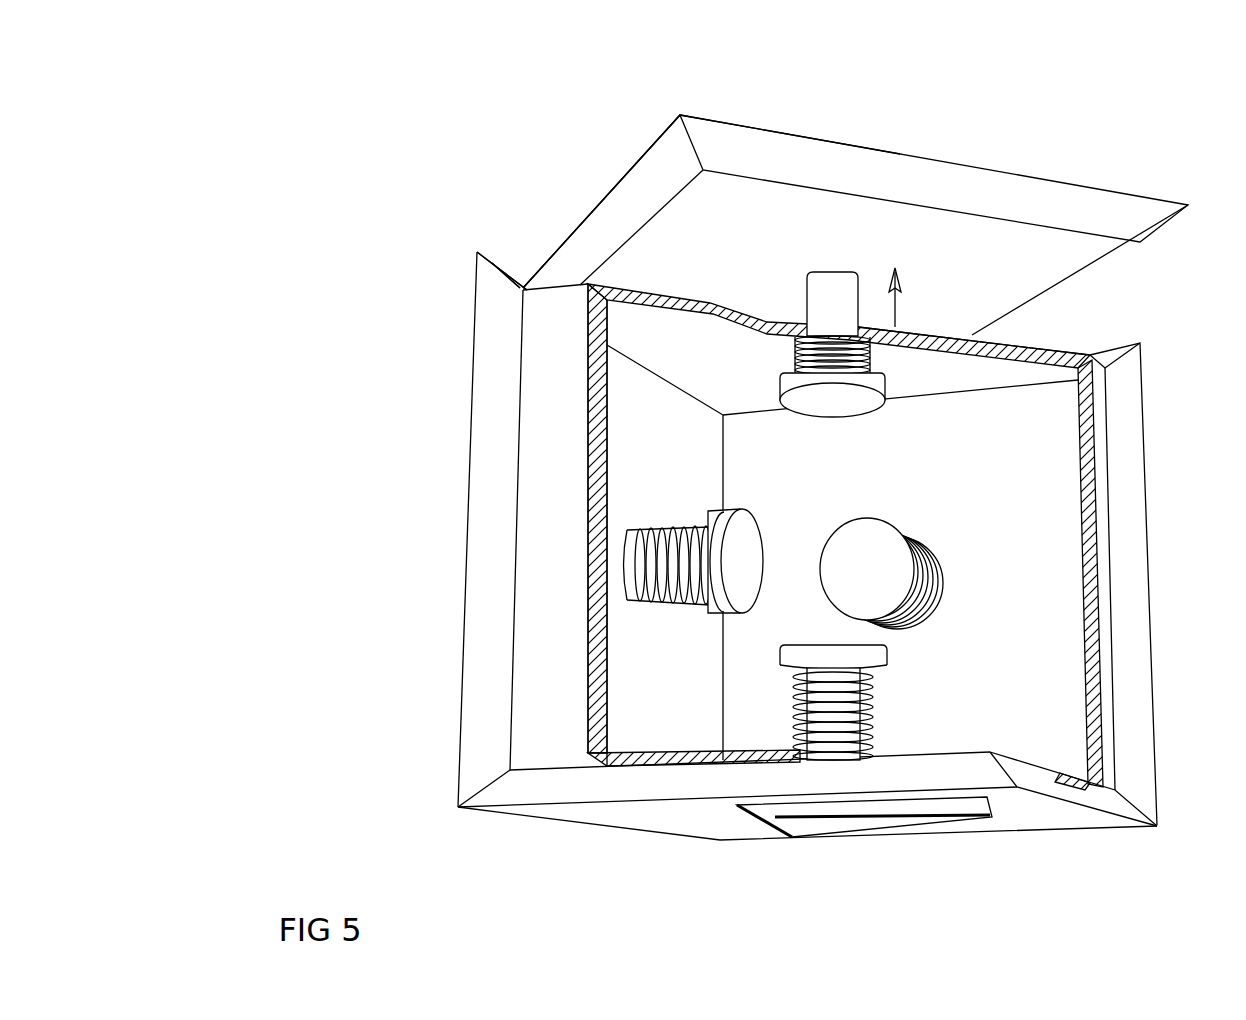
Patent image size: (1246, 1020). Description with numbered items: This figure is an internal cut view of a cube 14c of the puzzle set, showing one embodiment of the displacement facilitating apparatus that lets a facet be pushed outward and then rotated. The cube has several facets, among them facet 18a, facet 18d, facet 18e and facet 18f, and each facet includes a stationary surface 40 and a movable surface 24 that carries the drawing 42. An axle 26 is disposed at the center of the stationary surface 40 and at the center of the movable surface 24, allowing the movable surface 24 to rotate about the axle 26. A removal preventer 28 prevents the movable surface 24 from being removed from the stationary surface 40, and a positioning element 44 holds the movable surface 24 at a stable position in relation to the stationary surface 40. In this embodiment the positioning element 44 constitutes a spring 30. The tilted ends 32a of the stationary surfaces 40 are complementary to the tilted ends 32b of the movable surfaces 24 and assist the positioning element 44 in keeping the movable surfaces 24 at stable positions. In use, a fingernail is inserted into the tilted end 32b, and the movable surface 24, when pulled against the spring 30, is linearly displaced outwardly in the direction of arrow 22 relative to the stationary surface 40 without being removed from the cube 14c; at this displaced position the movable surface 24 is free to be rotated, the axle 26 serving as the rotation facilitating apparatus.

The cube 14c is at (535, 83).
The tilted end of movable surface 32b is at (652, 174).
The facet 18a is at (1006, 104).
The movable surface 24 is at (1040, 178).
The axle 26 is at (825, 302).
The arrow 22 is at (908, 297).
The stationary surface 40 is at (978, 372).
The positioning element 44 is at (663, 342).
The spring 30 is at (793, 357).
The removal preventer 28 is at (857, 405).
The tilted end of stationary surface 32a is at (500, 266).
The facet 18e is at (657, 490).
The facet 18d is at (1040, 593).
The drawing 42 is at (770, 827).
The facet 18f is at (947, 845).